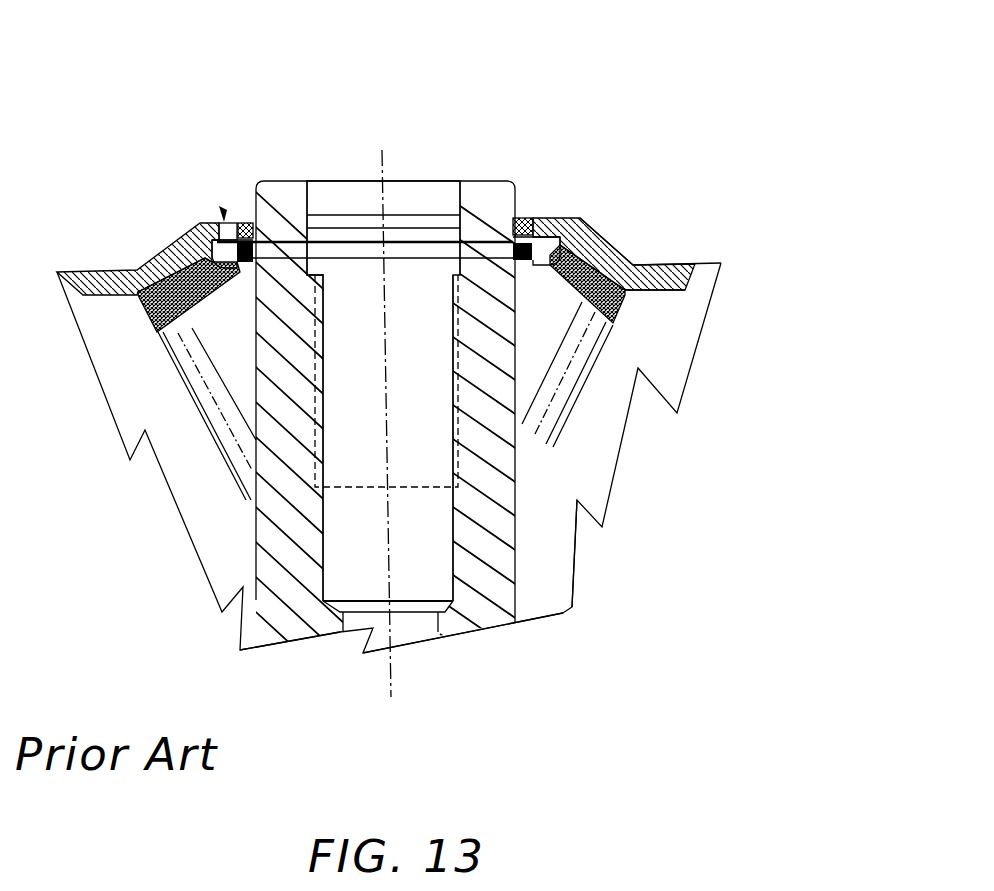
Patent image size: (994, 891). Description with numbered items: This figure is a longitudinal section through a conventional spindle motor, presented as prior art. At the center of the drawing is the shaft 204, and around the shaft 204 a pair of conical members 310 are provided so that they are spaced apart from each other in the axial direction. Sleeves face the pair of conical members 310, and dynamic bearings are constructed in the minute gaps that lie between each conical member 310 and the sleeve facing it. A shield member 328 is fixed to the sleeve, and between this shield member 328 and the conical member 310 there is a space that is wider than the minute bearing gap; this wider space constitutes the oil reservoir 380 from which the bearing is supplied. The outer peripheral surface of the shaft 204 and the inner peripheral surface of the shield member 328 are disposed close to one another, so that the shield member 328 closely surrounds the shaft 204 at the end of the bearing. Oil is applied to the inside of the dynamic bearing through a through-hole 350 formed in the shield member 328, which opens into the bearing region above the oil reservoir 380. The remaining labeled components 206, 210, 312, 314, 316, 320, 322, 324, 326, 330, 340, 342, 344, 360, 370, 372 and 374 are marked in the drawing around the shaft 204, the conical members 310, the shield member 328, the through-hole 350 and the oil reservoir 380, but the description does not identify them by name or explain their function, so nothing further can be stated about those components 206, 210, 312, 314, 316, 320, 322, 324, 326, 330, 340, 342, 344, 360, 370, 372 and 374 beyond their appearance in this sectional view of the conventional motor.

The shaft 204 is at (470, 182).
The direction arrow 206 is at (742, 493).
The fixture 210 is at (683, 553).
The conical member 310 is at (530, 327).
The threaded bore 312 is at (512, 414).
The sleeve 314 is at (505, 485).
The lower body portion 316 is at (522, 470).
The fixture body 320 is at (530, 420).
The sleeve bottom 322 is at (527, 478).
The tapered surface 324 is at (582, 372).
The bracket 326 is at (627, 229).
The shield member 328 is at (612, 218).
The tapered wedge 330 is at (615, 320).
The nut cavity 340 is at (242, 222).
The left bracket 342 is at (238, 222).
The clamp wedge 344 is at (246, 222).
The through-hole 350 is at (222, 212).
The fastener 360 is at (585, 224).
The clamp block 370 is at (540, 218).
The nut cavity 372 is at (520, 218).
The spacer 374 is at (577, 219).
The oil reservoir 380 is at (640, 284).